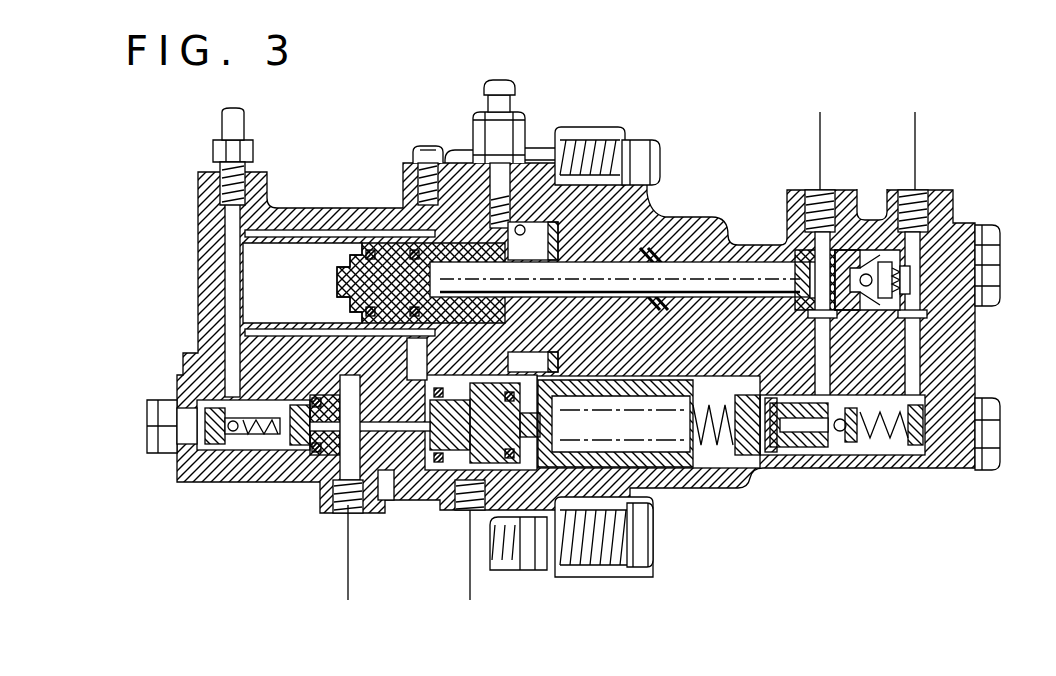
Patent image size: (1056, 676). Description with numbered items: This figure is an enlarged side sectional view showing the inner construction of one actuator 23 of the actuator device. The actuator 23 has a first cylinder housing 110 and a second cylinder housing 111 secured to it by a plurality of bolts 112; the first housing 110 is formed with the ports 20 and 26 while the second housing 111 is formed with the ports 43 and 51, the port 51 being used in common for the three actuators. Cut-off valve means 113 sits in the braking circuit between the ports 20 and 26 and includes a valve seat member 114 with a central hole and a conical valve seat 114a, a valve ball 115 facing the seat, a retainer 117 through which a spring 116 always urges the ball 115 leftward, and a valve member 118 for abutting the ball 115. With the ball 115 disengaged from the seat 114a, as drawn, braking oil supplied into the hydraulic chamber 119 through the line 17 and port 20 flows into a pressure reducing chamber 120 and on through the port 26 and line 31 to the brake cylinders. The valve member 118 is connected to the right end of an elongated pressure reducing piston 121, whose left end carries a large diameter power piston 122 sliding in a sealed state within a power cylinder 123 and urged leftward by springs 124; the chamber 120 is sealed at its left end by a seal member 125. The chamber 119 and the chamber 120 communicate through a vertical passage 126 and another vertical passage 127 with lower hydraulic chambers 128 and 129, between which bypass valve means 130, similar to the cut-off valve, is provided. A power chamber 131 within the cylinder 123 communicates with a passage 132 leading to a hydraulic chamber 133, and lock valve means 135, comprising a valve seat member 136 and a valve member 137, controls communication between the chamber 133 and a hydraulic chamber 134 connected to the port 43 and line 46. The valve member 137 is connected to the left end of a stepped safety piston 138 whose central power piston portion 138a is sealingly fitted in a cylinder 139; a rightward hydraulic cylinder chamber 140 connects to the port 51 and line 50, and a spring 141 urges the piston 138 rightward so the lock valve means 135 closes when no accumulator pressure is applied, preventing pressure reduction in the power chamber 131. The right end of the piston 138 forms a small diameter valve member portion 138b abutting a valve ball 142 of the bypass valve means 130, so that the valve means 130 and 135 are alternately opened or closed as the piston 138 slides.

The line 17 is at (917, 140).
The port 20 is at (920, 200).
The actuator 23 is at (570, 125).
The port 26 is at (815, 195).
The line 31 is at (818, 140).
The port 43 is at (344, 514).
The line 46 is at (349, 587).
The line 50 is at (471, 587).
The port 51 is at (462, 512).
The first cylinder housing 110 is at (752, 483).
The second cylinder housing 111 is at (188, 468).
The bolts 112 is at (645, 165).
The cut-off valve means 113 is at (878, 302).
The valve seat member 114 is at (852, 248).
The conical valve seat 114a is at (870, 248).
The valve ball 115 is at (905, 255).
The spring 116 is at (912, 285).
The retainer 117 is at (890, 305).
The valve member 118 is at (843, 320).
The hydraulic chamber 119 is at (920, 275).
The pressure reducing chamber 120 is at (788, 238).
The pressure reducing piston 121 is at (713, 270).
The power piston 122 is at (368, 255).
The power cylinder 123 is at (298, 235).
The springs 124 is at (440, 250).
The seal member 125 is at (660, 255).
The vertical passage 126 is at (918, 378).
The vertical passage 127 is at (823, 372).
The lower hydraulic chamber 128 is at (907, 440).
The lower hydraulic chamber 129 is at (838, 460).
The bypass valve means 130 is at (856, 444).
The power chamber 131 is at (252, 258).
The passage 132 is at (232, 285).
The hydraulic chamber 133 is at (304, 402).
The hydraulic chamber 134 is at (368, 514).
The lock valve means 135 is at (295, 448).
The valve seat member 136 is at (322, 458).
The valve member 137 is at (288, 450).
The stepped safety piston 138 is at (660, 442).
The power piston portion 138a is at (386, 500).
The small diameter valve member portion 138b is at (826, 462).
The cylinder 139 is at (408, 374).
The hydraulic cylinder chamber 140 is at (478, 448).
The spring 141 is at (702, 455).
The valve ball 142 is at (849, 452).